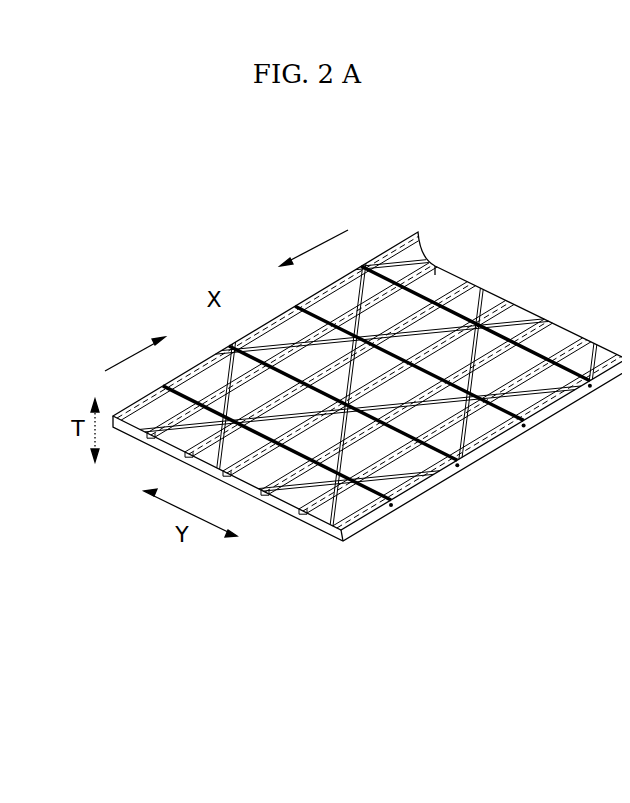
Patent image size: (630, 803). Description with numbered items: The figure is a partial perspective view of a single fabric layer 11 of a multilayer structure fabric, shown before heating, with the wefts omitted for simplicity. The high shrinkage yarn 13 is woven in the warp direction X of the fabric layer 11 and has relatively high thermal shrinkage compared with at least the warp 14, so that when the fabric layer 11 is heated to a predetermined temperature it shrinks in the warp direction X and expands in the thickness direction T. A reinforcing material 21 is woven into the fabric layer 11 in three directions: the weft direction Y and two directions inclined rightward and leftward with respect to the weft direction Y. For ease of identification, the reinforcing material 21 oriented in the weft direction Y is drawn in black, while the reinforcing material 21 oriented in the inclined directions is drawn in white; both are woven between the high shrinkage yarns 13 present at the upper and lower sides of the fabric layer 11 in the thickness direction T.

The fabric layer 11 is at (355, 527).
The high shrinkage yarn 13 is at (286, 485).
The warp 14 is at (377, 501).
The reinforcing material 21 is at (455, 425).